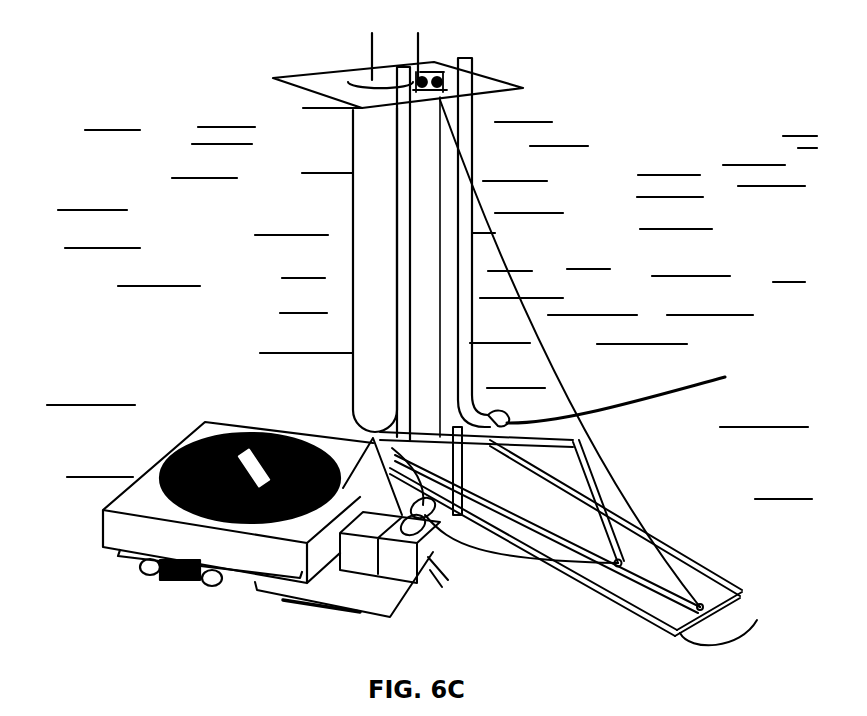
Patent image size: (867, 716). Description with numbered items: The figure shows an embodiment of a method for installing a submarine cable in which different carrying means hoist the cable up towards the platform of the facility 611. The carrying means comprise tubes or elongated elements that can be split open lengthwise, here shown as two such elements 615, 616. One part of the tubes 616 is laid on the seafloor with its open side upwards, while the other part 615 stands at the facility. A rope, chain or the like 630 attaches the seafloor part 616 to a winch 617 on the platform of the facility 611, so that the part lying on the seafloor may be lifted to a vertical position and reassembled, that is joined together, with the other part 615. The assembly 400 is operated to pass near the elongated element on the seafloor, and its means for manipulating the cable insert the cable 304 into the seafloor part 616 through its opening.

The cable 304 is at (623, 415).
The assembly 400 is at (97, 520).
The facility 611 is at (350, 383).
The tube or elongated element part 615 is at (443, 208).
The tube or elongated element part 616 is at (565, 503).
The winch 617 is at (433, 63).
The rope, chain or the like 630 is at (502, 250).